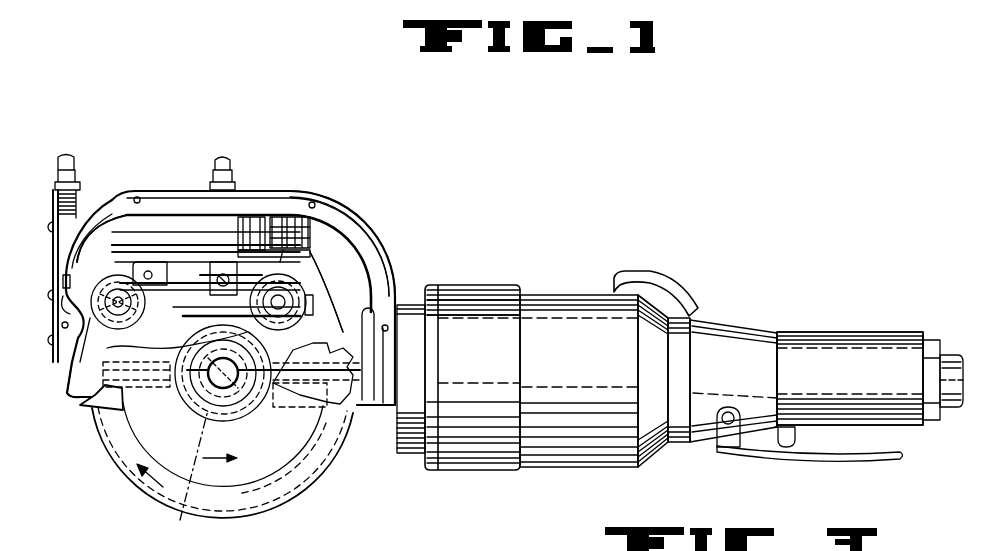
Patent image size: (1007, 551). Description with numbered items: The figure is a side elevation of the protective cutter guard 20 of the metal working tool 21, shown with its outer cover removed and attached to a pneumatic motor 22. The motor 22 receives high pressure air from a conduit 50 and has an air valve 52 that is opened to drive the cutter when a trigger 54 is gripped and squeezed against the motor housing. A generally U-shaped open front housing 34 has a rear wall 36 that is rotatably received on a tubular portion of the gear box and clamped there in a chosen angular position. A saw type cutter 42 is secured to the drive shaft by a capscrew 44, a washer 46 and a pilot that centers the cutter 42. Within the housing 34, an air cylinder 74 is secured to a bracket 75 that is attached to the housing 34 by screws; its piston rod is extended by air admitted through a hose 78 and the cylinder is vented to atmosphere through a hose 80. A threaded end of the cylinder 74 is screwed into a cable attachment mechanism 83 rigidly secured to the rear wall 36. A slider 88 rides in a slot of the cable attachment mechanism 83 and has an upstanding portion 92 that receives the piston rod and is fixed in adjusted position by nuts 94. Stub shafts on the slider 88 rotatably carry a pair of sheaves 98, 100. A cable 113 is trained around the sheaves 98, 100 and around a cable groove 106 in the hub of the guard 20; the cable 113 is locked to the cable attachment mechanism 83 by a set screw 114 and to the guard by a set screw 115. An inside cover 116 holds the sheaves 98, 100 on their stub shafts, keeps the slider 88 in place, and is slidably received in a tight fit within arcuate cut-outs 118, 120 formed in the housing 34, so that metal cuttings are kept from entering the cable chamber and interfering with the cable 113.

The protective cutter guard 20 is at (134, 494).
The metal working tool 21 is at (640, 267).
The motor 22 is at (587, 370).
The housing 34 is at (360, 203).
The rear wall 36 is at (68, 414).
The saw type cutter 42 is at (297, 450).
The capscrew 44 is at (212, 383).
The washer 46 is at (232, 410).
The conduit 50 is at (957, 352).
The air valve 52 is at (802, 432).
The trigger 54 is at (757, 452).
The air cylinder 74 is at (150, 218).
The bracket 75 is at (80, 189).
The hose 78 is at (59, 161).
The hose 80 is at (223, 156).
The cable attachment mechanism 83 is at (262, 215).
The slider 88 is at (297, 226).
The upstanding portion 92 is at (352, 252).
The nuts 94 is at (298, 214).
The sheave 98 is at (120, 270).
The sheave 100 is at (383, 270).
The cable groove 106 is at (203, 480).
The cable 113 is at (178, 232).
The set screw 114 is at (238, 205).
The set screw 115 is at (397, 367).
The inside cover 116 is at (352, 257).
The arcuate cut-out 118 is at (85, 406).
The arcuate cut-out 120 is at (397, 338).